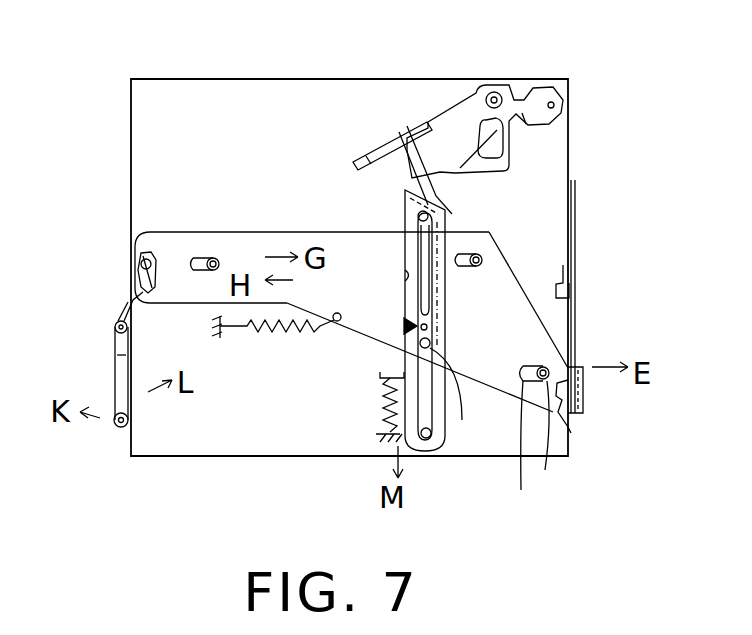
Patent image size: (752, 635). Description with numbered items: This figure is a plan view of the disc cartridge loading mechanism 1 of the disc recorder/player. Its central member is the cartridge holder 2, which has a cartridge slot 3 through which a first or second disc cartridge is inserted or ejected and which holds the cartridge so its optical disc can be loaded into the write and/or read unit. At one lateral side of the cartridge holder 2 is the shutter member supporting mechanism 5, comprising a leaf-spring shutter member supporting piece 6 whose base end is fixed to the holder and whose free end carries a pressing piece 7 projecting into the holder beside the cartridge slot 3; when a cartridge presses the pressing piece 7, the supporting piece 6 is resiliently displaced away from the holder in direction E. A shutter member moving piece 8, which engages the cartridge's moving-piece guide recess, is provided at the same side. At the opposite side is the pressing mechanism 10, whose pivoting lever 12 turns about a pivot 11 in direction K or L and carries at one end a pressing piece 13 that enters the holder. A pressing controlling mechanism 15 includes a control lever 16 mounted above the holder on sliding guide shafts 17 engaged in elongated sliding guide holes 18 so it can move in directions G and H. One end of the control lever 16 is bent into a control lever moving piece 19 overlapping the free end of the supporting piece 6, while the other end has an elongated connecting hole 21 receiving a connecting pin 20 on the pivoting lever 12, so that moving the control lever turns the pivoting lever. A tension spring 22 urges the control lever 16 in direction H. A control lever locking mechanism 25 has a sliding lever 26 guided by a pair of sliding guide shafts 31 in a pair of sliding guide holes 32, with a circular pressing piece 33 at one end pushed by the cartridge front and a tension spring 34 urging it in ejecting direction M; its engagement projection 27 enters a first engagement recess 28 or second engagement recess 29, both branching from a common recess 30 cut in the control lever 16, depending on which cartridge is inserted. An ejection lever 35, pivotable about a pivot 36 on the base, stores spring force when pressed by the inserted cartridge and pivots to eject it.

The loading mechanism 1 is at (605, 106).
The cartridge holder 2 is at (252, 456).
The cartridge slot 3 is at (143, 458).
The shutter member supporting mechanism 5 is at (573, 305).
The shutter member supporting piece 6 is at (576, 335).
The pressing piece 7 is at (567, 416).
The shutter member moving piece 8 is at (572, 262).
The pressing mechanism 10 is at (113, 313).
The pivot 11 is at (113, 326).
The pivoting lever 12 is at (118, 358).
The pressing piece 13 is at (113, 430).
The pressing controlling mechanism 15 is at (300, 215).
The control lever 16 is at (245, 245).
The sliding guide shafts 17 is at (213, 257).
The sliding guide holes 18 is at (195, 270).
The control lever moving piece 19 is at (584, 394).
The connecting pin 20 is at (145, 265).
The connecting hole 21 is at (155, 235).
The tension spring 22 is at (262, 330).
The control lever locking mechanism 25 is at (375, 203).
The sliding lever 26 is at (403, 335).
The engagement projection 27 is at (433, 331).
The first engagement recess 28 is at (406, 277).
The second engagement recess 29 is at (433, 294).
The recess 30 is at (398, 328).
The sliding guide shafts 31 is at (431, 270).
The sliding guide holes 32 is at (433, 211).
The pressing piece 33 is at (423, 200).
The tension spring 34 is at (382, 405).
The ejection lever 35 is at (434, 123).
The pivot 36 is at (494, 92).